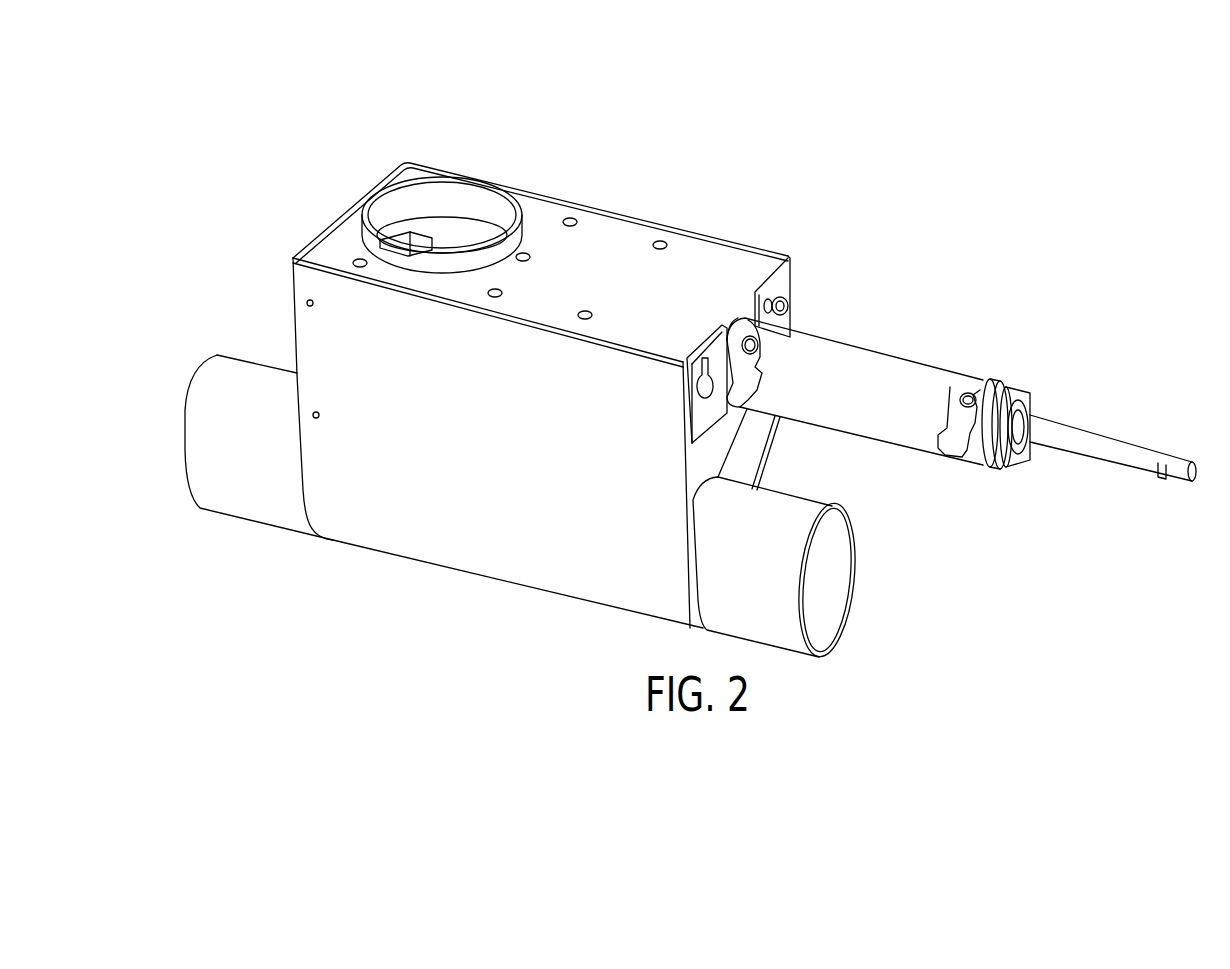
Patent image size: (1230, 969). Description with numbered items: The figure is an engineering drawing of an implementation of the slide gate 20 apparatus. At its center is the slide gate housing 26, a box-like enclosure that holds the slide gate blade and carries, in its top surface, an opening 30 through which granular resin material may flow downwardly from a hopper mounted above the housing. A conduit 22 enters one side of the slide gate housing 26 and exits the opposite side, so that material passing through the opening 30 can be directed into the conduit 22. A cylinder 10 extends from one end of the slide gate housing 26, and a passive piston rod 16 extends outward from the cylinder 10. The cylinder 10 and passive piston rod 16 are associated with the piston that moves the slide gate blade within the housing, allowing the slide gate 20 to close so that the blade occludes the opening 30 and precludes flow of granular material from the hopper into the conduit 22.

The slide gate 20 is at (715, 112).
The slide gate housing 26 is at (637, 197).
The opening 30 is at (458, 197).
The conduit 22 is at (198, 440).
The cylinder 10 is at (880, 365).
The passive piston rod 16 is at (1082, 447).